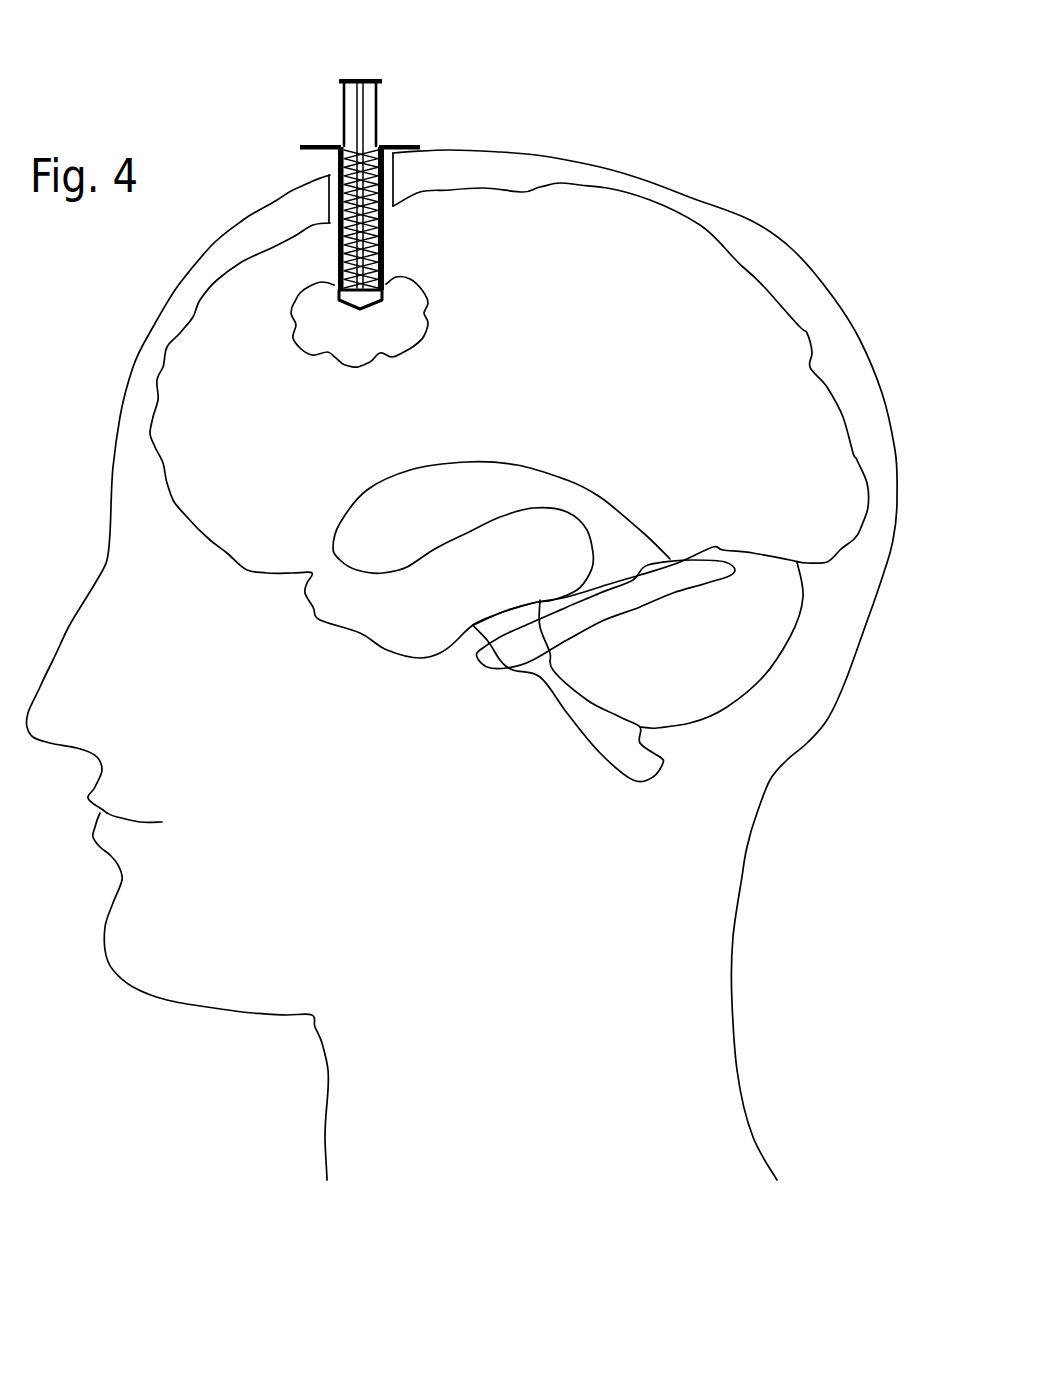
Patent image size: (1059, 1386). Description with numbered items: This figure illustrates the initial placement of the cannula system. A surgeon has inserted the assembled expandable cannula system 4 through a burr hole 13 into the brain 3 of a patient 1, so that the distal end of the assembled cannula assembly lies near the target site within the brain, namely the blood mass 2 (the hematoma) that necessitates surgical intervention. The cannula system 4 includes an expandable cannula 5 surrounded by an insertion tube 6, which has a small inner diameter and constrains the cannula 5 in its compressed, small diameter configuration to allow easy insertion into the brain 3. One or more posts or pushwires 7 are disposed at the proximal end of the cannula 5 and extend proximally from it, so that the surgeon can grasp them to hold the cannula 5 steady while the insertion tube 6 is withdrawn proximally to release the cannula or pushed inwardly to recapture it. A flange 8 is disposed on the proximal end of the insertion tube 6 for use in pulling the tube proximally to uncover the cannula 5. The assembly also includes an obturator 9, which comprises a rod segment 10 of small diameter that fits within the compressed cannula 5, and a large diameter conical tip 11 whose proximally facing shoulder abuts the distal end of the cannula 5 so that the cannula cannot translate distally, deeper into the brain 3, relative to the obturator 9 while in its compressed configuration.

The patient 1 is at (710, 149).
The blood mass 2 is at (292, 318).
The brain 3 is at (517, 482).
The expandable cannula system 4 is at (371, 193).
The expandable cannula 5 is at (338, 282).
The insertion tube 6 is at (337, 197).
The posts or pushwires 7 is at (344, 120).
The flange 8 is at (300, 147).
The obturator 9 is at (340, 81).
The rod segment 10 is at (367, 100).
The conical tip 11 is at (383, 297).
The burr hole 13 is at (399, 184).